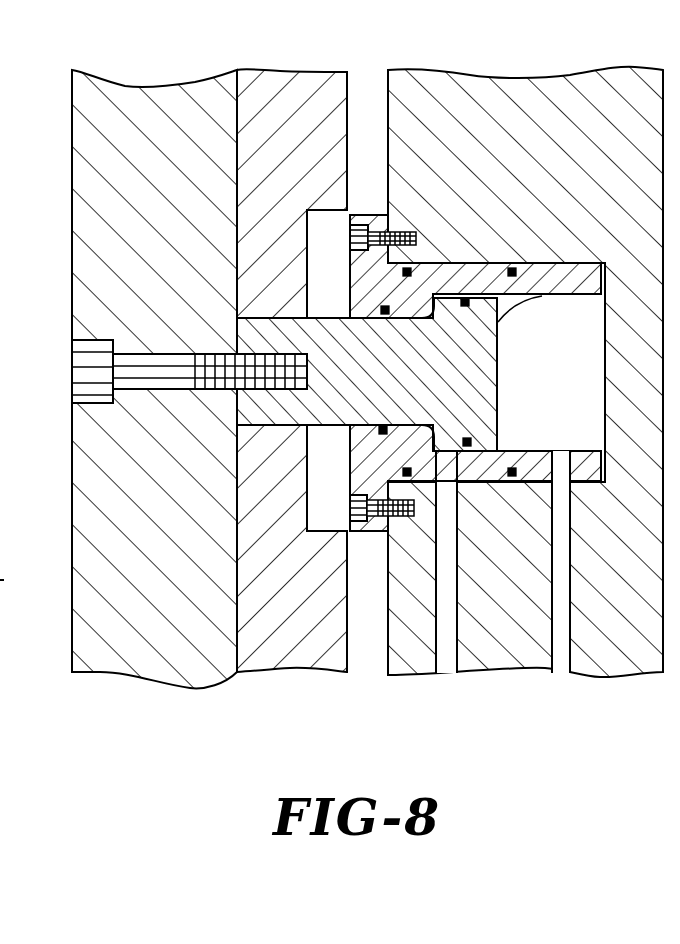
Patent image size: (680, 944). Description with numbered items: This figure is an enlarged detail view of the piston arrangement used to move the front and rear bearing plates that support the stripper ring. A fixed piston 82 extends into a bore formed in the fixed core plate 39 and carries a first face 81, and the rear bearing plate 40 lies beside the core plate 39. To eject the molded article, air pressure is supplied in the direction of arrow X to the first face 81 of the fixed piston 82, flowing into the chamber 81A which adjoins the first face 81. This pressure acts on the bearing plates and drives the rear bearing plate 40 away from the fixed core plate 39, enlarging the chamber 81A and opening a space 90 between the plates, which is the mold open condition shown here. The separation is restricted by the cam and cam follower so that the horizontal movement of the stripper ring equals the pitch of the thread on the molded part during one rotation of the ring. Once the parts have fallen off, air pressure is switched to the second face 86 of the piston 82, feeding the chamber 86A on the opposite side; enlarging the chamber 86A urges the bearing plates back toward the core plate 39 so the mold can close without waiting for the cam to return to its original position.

The fixed core plate 39 is at (490, 105).
The rear bearing plate 40 is at (275, 102).
The first face 81 is at (560, 262).
The chamber 81A is at (578, 379).
The fixed piston 82 is at (307, 340).
The second face 86 is at (434, 300).
The chamber 86A is at (427, 440).
The space 90 is at (362, 100).
The arrow X is at (584, 428).